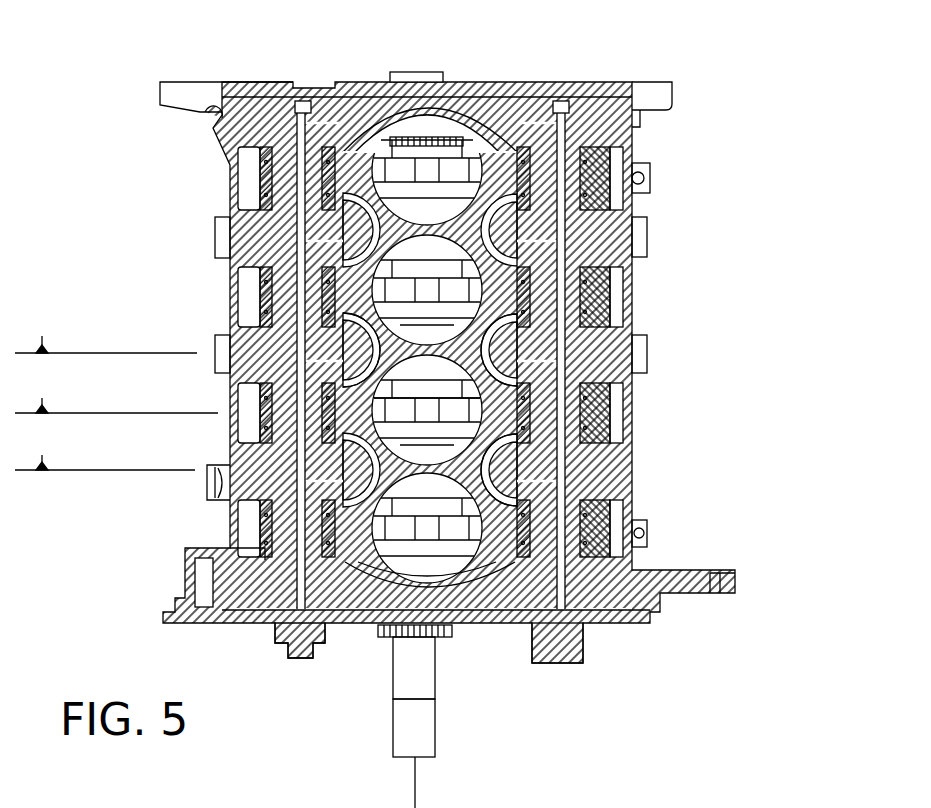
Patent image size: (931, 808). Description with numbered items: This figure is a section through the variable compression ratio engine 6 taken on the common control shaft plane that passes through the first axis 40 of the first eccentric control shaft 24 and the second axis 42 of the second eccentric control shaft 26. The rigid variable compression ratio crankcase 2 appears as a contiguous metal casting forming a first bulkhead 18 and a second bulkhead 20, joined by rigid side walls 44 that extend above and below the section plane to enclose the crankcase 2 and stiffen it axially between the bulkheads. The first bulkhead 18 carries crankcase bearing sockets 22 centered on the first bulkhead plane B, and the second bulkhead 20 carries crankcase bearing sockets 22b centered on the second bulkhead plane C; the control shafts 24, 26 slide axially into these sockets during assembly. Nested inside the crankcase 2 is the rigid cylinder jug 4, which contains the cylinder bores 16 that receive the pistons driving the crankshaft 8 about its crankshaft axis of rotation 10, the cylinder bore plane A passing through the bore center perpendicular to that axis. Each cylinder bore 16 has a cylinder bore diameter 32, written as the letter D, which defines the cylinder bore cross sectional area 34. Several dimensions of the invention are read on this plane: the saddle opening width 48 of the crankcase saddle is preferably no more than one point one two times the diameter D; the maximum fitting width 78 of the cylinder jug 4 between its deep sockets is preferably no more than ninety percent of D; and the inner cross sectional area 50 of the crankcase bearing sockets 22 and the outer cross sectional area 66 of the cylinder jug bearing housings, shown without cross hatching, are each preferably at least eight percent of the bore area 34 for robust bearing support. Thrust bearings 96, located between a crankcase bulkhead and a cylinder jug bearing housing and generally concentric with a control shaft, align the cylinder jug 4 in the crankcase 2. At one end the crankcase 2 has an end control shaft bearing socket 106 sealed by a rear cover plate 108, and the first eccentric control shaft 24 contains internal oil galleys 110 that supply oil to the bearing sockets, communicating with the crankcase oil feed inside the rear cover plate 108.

The variable compression ratio crankcase 2 is at (617, 230).
The cylinder jug 4 is at (517, 163).
The variable compression ratio engine 6 is at (728, 89).
The crankshaft 8 is at (450, 82).
The crankshaft axis of rotation 10 is at (420, 75).
The cylinder bore 16 is at (300, 376).
The first bulkhead 18 is at (617, 478).
The second bulkhead 20 is at (632, 355).
The crankcase bearing sockets 22 is at (628, 527).
The crankcase bearing sockets of second bulkhead 22b is at (632, 338).
The first eccentric control shaft 24 is at (278, 635).
The second eccentric control shaft 26 is at (573, 647).
The cylinder bore diameter 32 is at (377, 437).
The cylinder bore cross sectional area 34 is at (361, 350).
The cylinder bore diameter D is at (499, 470).
The first axis 40 is at (303, 80).
The second axis 42 is at (560, 78).
The rigid side walls 44 is at (632, 420).
The saddle opening width 48 is at (380, 465).
The inner cross sectional area 50 is at (350, 473).
The outer cross sectional area 66 is at (248, 405).
The maximum fitting width 78 is at (430, 440).
The thrust bearings 96 is at (243, 320).
The end control shaft bearing socket 106 is at (222, 88).
The rear cover plate 108 is at (263, 97).
The internal oil galleys 110 is at (300, 181).
The cylinder bore plane A is at (116, 393).
The first bulkhead plane B is at (105, 451).
The second bulkhead plane C is at (106, 332).